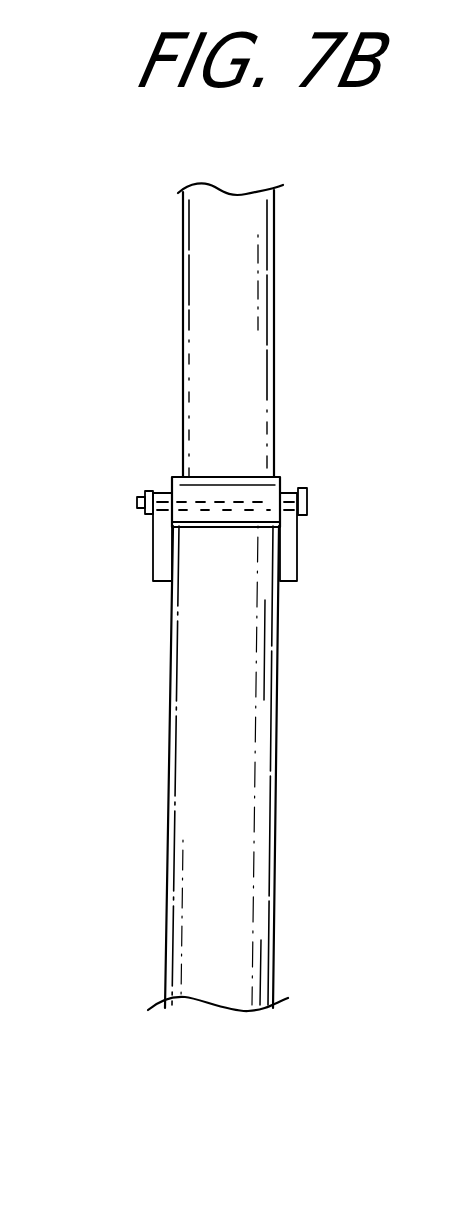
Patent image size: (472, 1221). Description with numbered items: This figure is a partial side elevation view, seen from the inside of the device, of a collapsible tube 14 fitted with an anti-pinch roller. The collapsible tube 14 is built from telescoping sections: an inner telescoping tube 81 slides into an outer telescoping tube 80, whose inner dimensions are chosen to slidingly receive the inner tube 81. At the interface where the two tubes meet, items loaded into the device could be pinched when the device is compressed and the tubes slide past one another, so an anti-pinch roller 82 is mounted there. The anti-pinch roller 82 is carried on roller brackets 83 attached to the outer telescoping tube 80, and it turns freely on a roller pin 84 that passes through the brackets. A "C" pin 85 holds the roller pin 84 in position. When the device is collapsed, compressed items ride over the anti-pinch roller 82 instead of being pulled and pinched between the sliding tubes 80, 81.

The collapsible tube 14 is at (209, 489).
The outer telescoping tube 80 is at (178, 730).
The inner telescoping tube 81 is at (194, 287).
The anti-pinch roller 82 is at (240, 486).
The roller bracket 83 is at (162, 540).
The roller pin 84 is at (308, 502).
The "C" pin 85 is at (145, 490).